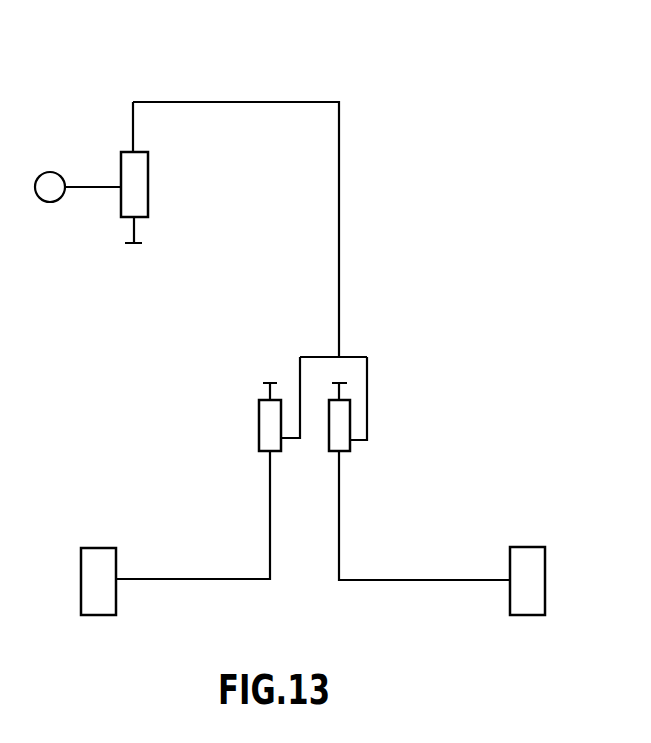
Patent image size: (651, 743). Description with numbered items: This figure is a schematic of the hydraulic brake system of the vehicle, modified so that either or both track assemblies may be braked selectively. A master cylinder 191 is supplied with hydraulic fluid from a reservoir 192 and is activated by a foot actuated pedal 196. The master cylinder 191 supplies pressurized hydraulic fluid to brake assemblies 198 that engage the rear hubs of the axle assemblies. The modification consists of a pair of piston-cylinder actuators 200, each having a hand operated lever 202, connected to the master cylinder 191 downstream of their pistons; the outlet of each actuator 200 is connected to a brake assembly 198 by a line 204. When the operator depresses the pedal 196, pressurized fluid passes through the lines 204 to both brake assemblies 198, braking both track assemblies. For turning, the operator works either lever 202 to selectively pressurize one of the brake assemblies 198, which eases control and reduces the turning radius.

The master cylinder 191 is at (140, 187).
The reservoir 192 is at (52, 193).
The foot actuated pedal 196 is at (138, 245).
The brake assemblies 198 is at (107, 547).
The piston-cylinder actuators 200 is at (258, 421).
The hand operated levers 202 is at (293, 102).
The lines 204 is at (269, 517).